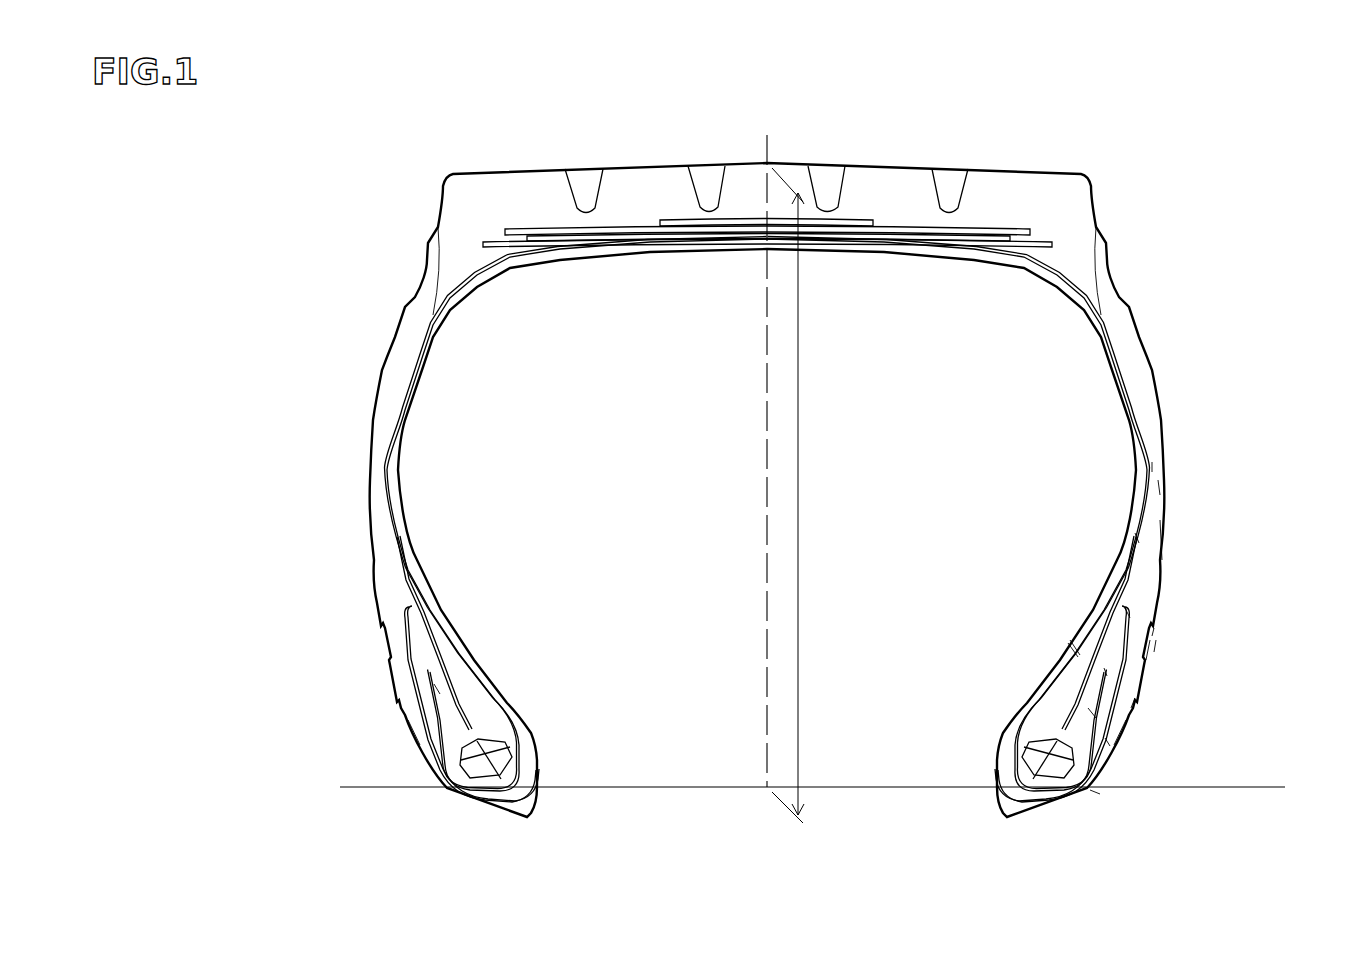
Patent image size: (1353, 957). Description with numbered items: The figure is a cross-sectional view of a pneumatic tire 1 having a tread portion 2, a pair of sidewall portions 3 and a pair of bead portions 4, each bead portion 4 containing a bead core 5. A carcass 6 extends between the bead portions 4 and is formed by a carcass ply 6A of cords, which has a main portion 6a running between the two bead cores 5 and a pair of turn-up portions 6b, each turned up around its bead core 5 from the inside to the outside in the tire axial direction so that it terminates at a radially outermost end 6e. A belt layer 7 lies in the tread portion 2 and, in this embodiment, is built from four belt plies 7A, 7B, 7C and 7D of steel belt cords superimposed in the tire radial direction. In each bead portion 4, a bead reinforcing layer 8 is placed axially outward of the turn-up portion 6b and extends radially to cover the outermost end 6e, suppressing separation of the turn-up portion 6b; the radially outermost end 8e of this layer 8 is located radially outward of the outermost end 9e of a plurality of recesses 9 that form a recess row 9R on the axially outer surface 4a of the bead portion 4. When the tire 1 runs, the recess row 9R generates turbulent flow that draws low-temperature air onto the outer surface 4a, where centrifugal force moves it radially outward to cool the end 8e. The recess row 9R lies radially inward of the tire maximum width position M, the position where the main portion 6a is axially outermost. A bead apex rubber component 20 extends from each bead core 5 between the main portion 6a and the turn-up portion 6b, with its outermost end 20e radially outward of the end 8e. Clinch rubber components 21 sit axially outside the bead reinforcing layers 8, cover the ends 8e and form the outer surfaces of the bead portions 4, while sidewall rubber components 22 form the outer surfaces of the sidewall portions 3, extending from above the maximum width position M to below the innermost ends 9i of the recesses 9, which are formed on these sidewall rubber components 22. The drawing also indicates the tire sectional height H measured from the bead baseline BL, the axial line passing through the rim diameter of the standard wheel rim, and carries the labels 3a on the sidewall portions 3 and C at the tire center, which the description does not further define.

The tire 1 is at (1117, 132).
The tread portion 2 is at (1010, 152).
The sidewall portions 3 is at (355, 476).
The sidewall outer surface 3a is at (1162, 542).
The bead portions 4 is at (400, 740).
The outer surface 4a is at (1098, 792).
The bead core 5 is at (503, 762).
The carcass 6 is at (1052, 272).
The carcass ply 6A is at (952, 627).
The main portion 6a is at (1073, 651).
The turn-up portions 6b is at (1092, 713).
The outermost ends 6e is at (1107, 670).
The belt layer 7 is at (767, 299).
The belt ply 7A is at (545, 248).
The belt ply 7B is at (600, 236).
The belt ply 7C is at (652, 242).
The belt ply 7D is at (766, 276).
The bead reinforcing layers 8 is at (417, 678).
The outermost end 8e is at (1128, 613).
The recesses 9 is at (1143, 653).
The outermost end 9e is at (1153, 632).
The innermost ends 9i is at (1133, 703).
The recess row 9R is at (1158, 646).
The bead apex rubber components 20 is at (1112, 613).
The outermost end 20e is at (1137, 537).
The clinch rubber components 21 is at (1107, 742).
The sidewall rubber components 22 is at (1157, 487).
The tire maximum width position M is at (1152, 467).
The tire equator C is at (767, 447).
The tire sectional height H is at (799, 495).
The bead baseline BL is at (392, 784).